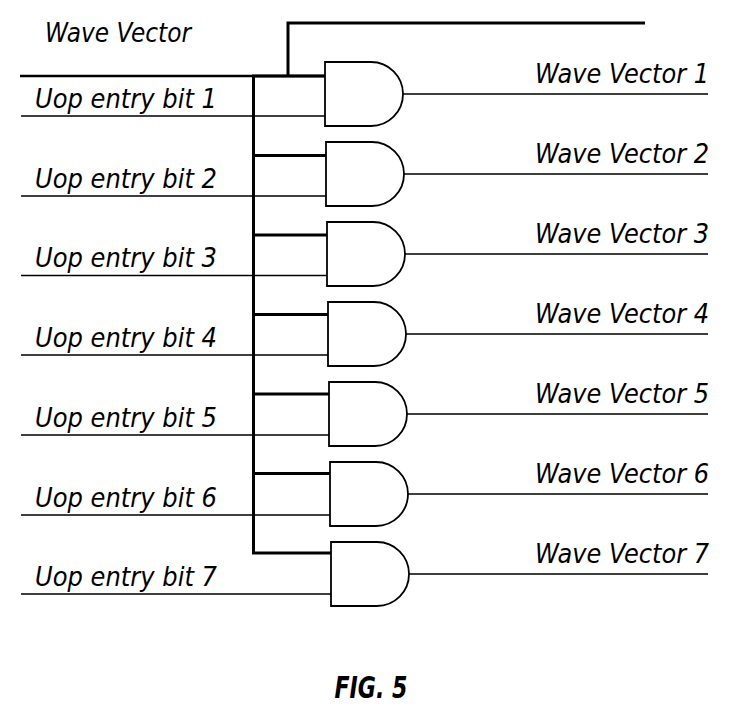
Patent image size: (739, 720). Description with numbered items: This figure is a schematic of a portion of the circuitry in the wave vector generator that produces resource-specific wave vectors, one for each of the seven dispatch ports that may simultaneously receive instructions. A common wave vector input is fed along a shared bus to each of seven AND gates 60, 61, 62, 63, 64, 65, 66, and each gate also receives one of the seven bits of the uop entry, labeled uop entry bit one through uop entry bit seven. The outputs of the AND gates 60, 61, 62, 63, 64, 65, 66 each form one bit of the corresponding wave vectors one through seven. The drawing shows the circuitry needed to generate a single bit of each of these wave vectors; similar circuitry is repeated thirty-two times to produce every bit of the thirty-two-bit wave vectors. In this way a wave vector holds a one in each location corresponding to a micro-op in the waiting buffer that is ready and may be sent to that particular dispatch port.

The AND gate 60 is at (378, 107).
The AND gate 61 is at (379, 187).
The AND gate 62 is at (380, 267).
The AND gate 63 is at (381, 347).
The AND gate 64 is at (382, 427).
The AND gate 65 is at (383, 507).
The AND gate 66 is at (384, 587).